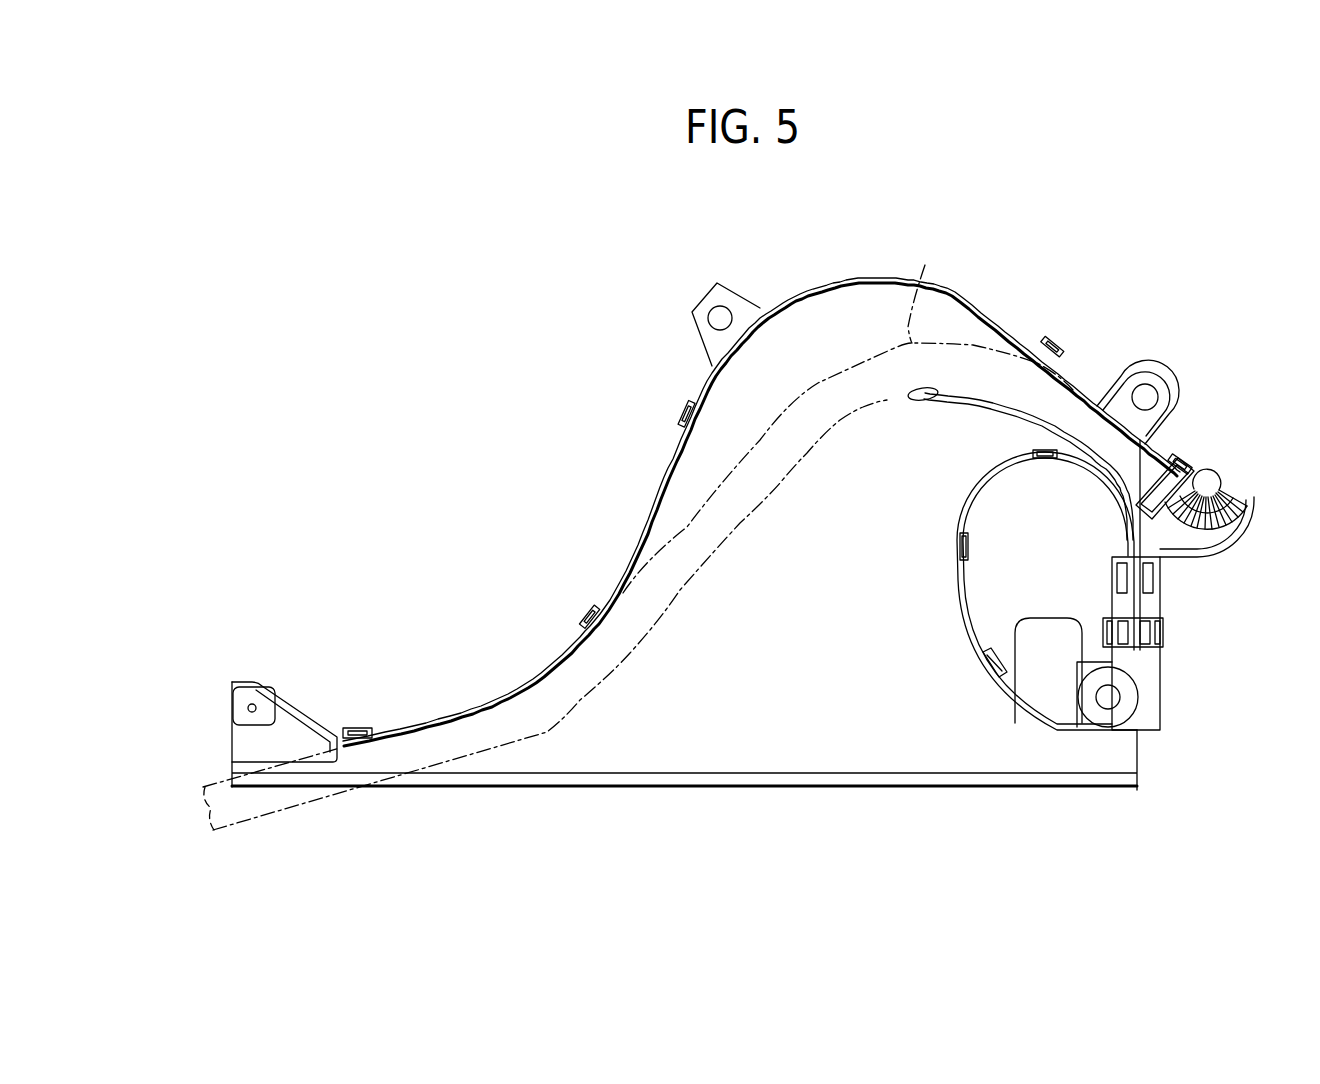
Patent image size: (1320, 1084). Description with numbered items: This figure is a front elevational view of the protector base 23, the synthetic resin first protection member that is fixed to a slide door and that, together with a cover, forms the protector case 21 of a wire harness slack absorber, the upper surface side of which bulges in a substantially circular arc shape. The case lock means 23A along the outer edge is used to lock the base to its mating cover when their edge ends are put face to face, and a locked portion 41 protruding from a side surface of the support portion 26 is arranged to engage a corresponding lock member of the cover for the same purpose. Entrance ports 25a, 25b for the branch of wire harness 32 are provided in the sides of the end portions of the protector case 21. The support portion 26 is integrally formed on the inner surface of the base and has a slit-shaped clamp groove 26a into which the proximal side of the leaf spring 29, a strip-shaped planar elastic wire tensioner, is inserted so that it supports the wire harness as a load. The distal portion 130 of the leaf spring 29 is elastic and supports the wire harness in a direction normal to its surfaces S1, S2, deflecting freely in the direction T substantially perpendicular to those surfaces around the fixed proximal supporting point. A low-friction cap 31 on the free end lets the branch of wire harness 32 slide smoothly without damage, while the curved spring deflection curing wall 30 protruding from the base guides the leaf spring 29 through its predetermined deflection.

The protector case 21 is at (555, 357).
The protector base 23 is at (870, 278).
The case lock means 23A is at (590, 618).
The entrance port 25a is at (1235, 485).
The entrance port 25b is at (238, 742).
The support portion 26 is at (1153, 607).
The clamp groove 26a is at (1130, 603).
The leaf spring 29 is at (1038, 410).
The spring deflection curing wall 30 is at (1000, 467).
The cap 31 is at (923, 387).
The branch of wire harness 32 is at (848, 414).
The locked portion 41 is at (1167, 627).
The distal portion 130 is at (977, 393).
The surface of the leaf spring S1 is at (1020, 389).
The surface of the leaf spring S2 is at (1004, 406).
The deflection direction T is at (916, 418).